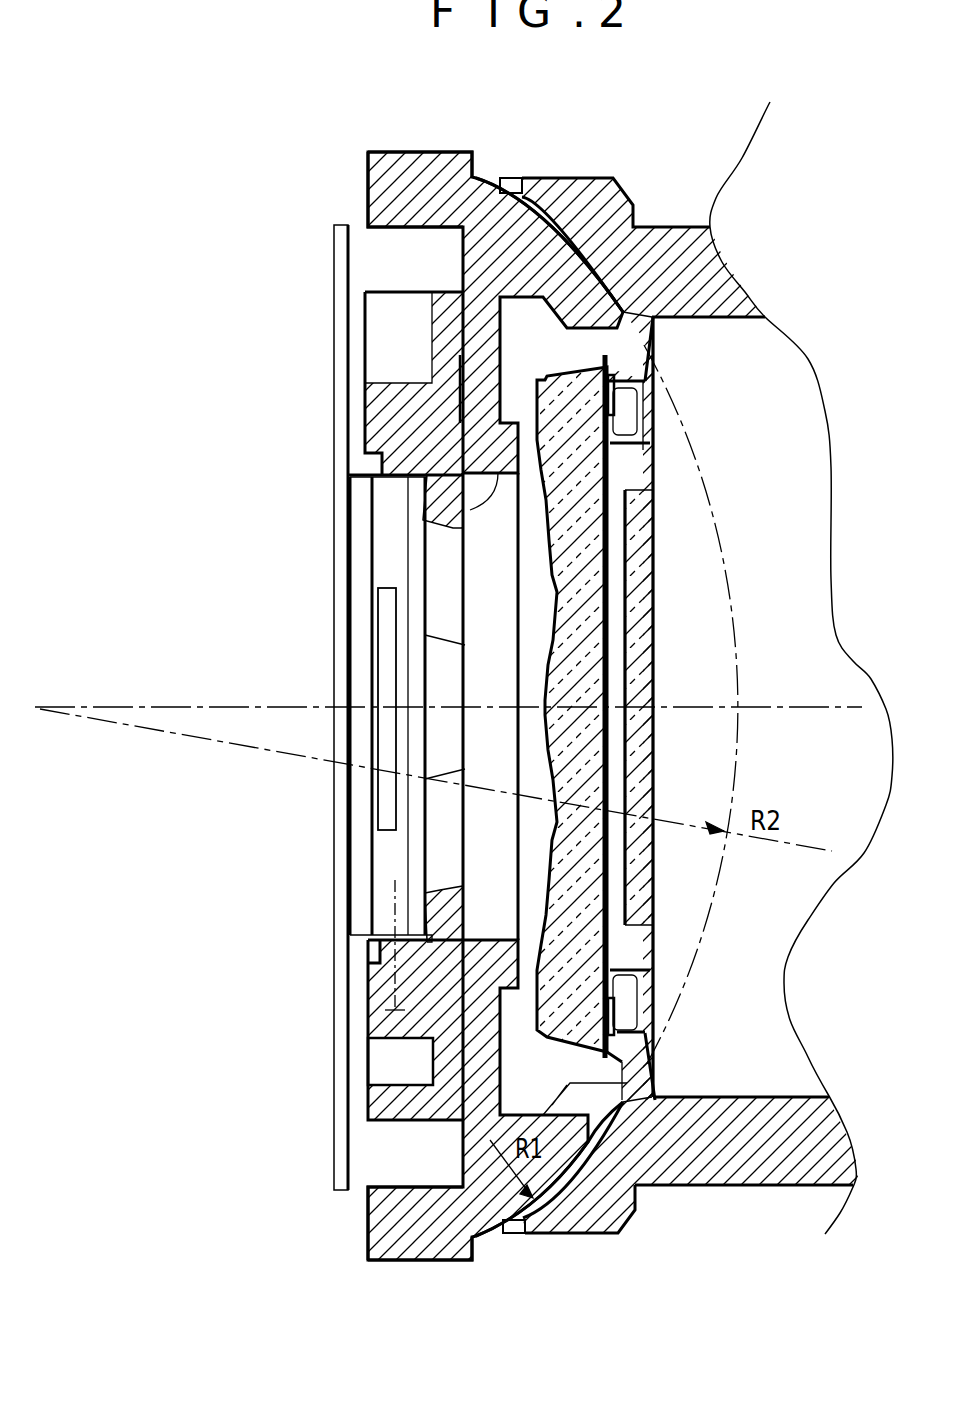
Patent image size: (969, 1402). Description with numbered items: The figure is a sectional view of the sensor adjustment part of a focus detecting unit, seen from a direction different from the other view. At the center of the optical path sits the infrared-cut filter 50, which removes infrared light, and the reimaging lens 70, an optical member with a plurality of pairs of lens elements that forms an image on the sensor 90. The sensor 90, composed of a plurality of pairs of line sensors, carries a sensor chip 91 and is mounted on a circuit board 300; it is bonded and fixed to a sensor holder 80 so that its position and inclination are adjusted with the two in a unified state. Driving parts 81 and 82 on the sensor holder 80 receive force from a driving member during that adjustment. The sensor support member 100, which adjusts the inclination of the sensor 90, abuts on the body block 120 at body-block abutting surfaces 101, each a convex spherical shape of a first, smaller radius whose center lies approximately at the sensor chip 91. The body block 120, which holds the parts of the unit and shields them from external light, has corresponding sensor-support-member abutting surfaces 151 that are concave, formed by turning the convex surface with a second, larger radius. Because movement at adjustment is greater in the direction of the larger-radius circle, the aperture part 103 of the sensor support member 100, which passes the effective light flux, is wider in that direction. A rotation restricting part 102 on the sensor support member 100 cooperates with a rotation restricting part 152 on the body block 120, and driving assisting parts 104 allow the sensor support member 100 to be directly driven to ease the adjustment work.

The infrared-cut filter 50 is at (652, 520).
The reimaging lens 70 is at (610, 952).
The sensor holder 80 is at (375, 982).
The driving part 81 is at (385, 1065).
The driving part 82 is at (390, 330).
The sensor 90 is at (355, 532).
The sensor chip 91 is at (385, 630).
The sensor support member 100 is at (473, 1157).
The body-block abutting surface 101 is at (487, 178).
The sensor-support-member rotation restricting part 102 is at (622, 215).
The aperture part 103 is at (453, 508).
The sensor-support-member driving assisting part 104 is at (377, 182).
The body block 120 is at (697, 240).
The sensor-support-member abutting surface 151 is at (530, 195).
The sensor-support-member rotation restricting part 152 is at (650, 348).
The circuit board 300 is at (340, 870).